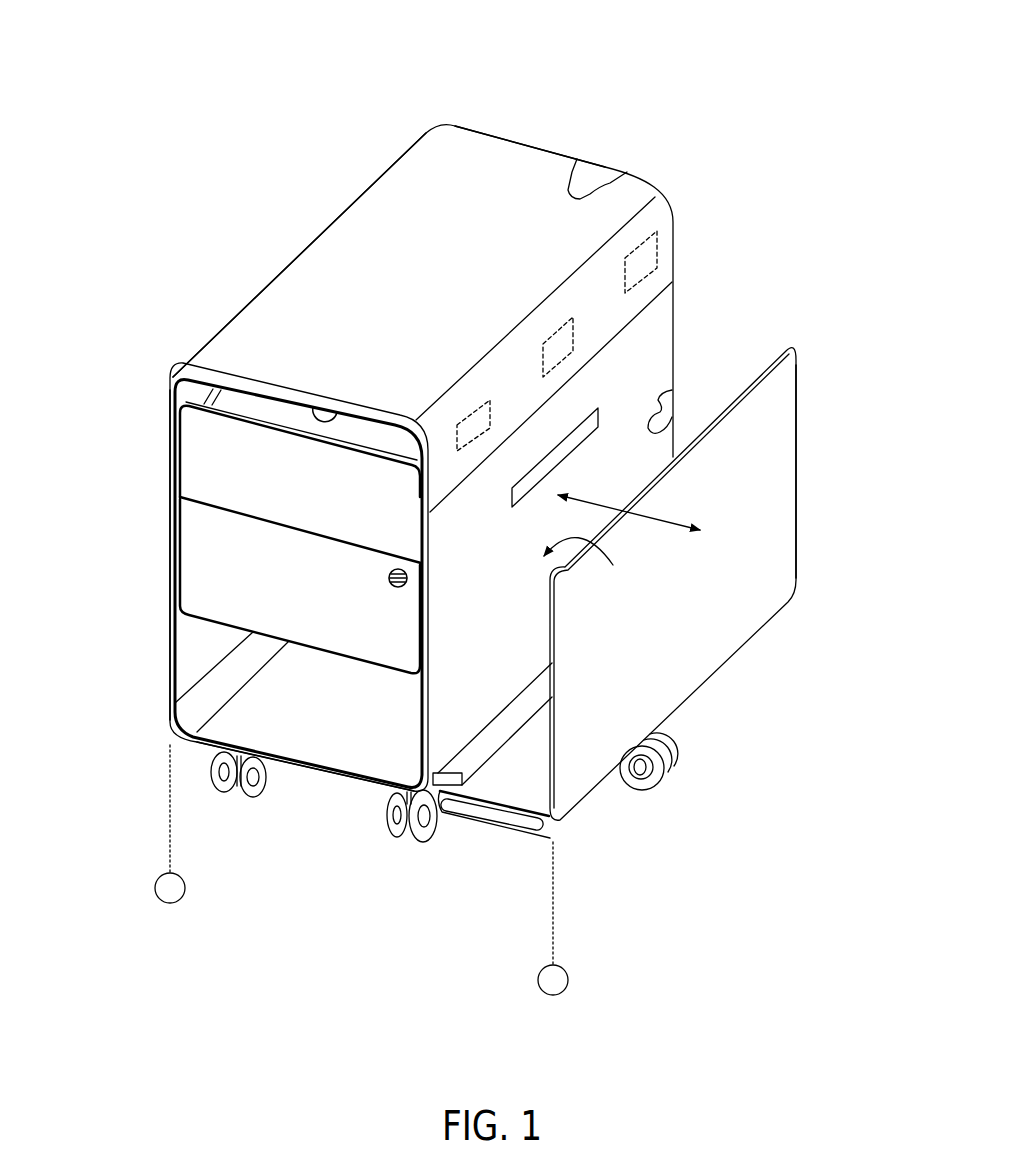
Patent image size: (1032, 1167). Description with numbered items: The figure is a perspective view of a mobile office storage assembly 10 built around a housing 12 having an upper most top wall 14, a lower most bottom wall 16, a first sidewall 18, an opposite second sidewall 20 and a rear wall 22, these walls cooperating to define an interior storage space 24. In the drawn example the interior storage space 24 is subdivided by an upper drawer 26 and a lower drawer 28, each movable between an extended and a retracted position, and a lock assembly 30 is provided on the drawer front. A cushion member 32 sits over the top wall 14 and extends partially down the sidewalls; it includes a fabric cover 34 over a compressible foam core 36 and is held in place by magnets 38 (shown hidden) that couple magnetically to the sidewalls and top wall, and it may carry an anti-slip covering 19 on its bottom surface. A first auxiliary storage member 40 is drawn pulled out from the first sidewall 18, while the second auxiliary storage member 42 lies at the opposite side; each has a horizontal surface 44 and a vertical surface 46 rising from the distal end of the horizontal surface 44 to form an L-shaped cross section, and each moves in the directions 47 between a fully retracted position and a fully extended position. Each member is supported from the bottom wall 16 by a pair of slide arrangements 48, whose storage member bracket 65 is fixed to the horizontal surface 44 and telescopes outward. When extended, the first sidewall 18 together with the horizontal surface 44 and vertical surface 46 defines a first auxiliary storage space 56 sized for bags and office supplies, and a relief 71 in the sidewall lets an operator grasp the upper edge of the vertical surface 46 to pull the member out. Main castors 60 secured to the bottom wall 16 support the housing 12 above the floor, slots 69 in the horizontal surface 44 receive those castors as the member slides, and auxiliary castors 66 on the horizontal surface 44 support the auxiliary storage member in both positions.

The mobile office storage assembly 10 is at (729, 49).
The housing 12 is at (678, 306).
The top wall 14 is at (247, 391).
The bottom wall 16 is at (333, 758).
The first sidewall 18 is at (654, 360).
The anti-slip covering 19 is at (340, 418).
The second sidewall 20 is at (190, 650).
The rear wall 22 is at (666, 414).
The interior storage space 24 is at (374, 744).
The upper drawer 26 is at (203, 453).
The lower drawer 28 is at (203, 548).
The lock assembly 30 is at (410, 585).
The cushion member 32 is at (481, 135).
The fabric cover 34 is at (527, 167).
The compressible foam core 36 is at (590, 176).
The magnets 38 is at (660, 243).
The first auxiliary storage member 40 is at (807, 463).
The second auxiliary storage member 42 is at (167, 584).
The horizontal surface 44 is at (208, 750).
The vertical surface 46 is at (790, 408).
The directions 47 is at (660, 527).
The slide arrangements 48 is at (466, 767).
The first auxiliary storage space 56 is at (591, 566).
The main castors 60 is at (252, 795).
The storage member bracket 65 is at (453, 772).
The auxiliary castors 66 is at (667, 752).
The slots 69 is at (492, 808).
The relief 71 is at (592, 423).